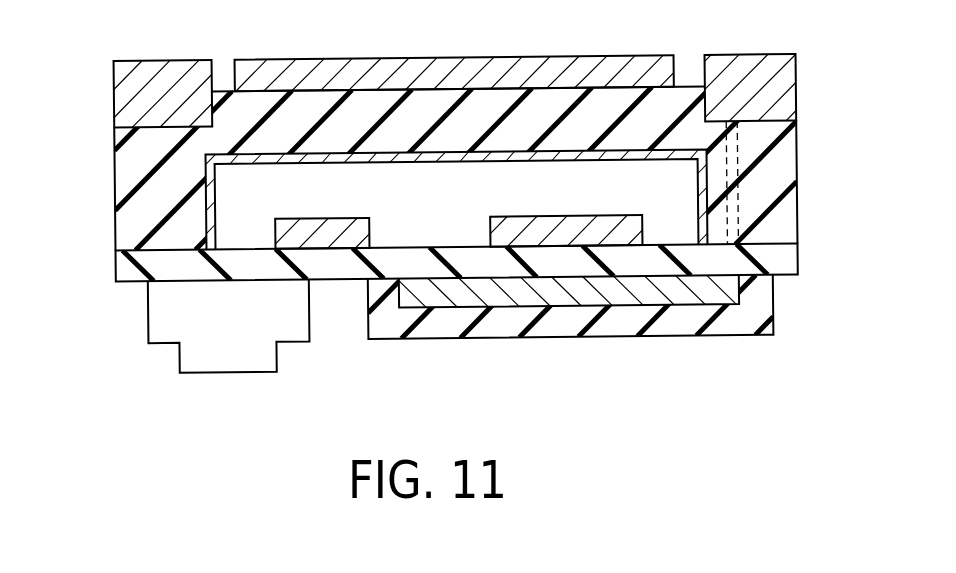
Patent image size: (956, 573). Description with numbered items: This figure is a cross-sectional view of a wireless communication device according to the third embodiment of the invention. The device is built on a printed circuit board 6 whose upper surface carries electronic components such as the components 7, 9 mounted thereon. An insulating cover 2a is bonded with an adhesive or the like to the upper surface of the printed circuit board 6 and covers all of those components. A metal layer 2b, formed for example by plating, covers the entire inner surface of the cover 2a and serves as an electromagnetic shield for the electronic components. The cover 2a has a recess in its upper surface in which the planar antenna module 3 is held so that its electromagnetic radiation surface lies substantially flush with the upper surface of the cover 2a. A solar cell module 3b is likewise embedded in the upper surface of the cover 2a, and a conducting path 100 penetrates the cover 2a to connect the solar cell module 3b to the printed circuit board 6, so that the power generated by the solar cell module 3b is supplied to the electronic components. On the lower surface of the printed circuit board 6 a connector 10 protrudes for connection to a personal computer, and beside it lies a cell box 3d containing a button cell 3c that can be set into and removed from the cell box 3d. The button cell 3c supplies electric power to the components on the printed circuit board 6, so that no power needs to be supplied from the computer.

The cover 2a is at (787, 156).
The metal layer 2b is at (210, 210).
The planar antenna module 3 is at (354, 69).
The solar cell module 3b is at (156, 67).
The button cell 3c is at (573, 296).
The cell box 3d is at (688, 329).
The printed circuit board 6 is at (783, 261).
The semiconductor element 7 is at (513, 223).
The semiconductor element 9 is at (278, 223).
The connector 10 is at (158, 326).
The conducting path 100 is at (727, 196).